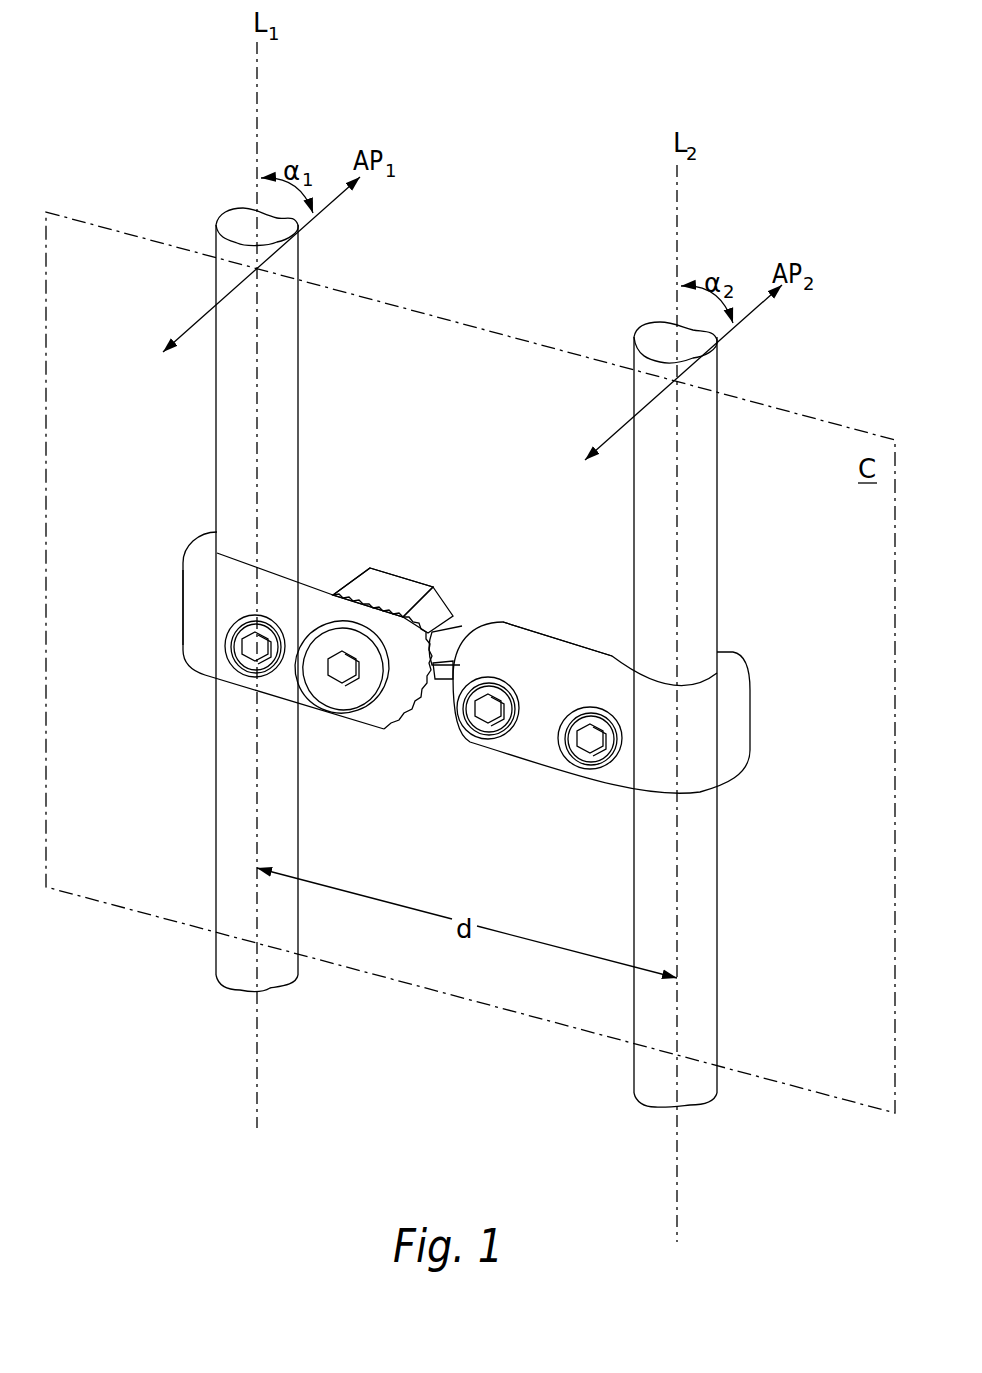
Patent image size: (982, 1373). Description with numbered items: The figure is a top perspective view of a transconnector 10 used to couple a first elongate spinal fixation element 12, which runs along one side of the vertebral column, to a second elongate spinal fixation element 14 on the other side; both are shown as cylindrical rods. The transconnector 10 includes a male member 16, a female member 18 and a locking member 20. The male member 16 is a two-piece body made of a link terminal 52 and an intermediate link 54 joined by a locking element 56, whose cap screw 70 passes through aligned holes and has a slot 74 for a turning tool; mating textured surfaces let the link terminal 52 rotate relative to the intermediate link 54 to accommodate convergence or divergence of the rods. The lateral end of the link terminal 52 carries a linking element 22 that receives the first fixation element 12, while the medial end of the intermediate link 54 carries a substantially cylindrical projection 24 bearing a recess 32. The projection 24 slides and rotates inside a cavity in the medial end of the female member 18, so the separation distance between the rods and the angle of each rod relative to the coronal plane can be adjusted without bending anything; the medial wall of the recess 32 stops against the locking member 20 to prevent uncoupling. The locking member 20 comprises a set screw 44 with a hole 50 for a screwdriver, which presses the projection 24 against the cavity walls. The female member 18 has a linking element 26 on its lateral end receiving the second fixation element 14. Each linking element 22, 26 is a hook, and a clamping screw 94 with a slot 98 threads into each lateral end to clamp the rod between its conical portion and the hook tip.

The transconnector 10 is at (467, 190).
The first elongate spinal fixation element 12 is at (235, 988).
The second elongate spinal fixation element 14 is at (698, 1094).
The male member 16 is at (410, 587).
The female member 18 is at (600, 663).
The locking member 20 is at (490, 733).
The male member linking element 22 is at (186, 658).
The projection 24 is at (463, 637).
The female member linking element 26 is at (743, 715).
The recess 32 is at (445, 634).
The set screw 44 is at (498, 732).
The hole 50 is at (485, 693).
The link terminal 52 is at (195, 563).
The intermediate link 54 is at (365, 577).
The locking element 56 is at (317, 697).
The cap screw 70 is at (363, 700).
The slot 74 is at (337, 693).
The clamping screw 94 is at (238, 668).
The slot 98 is at (233, 662).